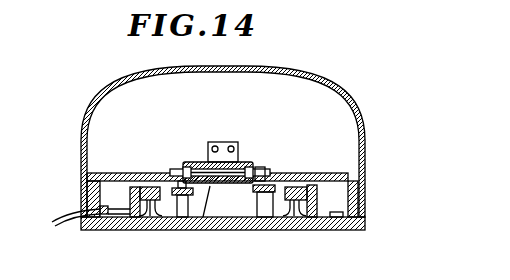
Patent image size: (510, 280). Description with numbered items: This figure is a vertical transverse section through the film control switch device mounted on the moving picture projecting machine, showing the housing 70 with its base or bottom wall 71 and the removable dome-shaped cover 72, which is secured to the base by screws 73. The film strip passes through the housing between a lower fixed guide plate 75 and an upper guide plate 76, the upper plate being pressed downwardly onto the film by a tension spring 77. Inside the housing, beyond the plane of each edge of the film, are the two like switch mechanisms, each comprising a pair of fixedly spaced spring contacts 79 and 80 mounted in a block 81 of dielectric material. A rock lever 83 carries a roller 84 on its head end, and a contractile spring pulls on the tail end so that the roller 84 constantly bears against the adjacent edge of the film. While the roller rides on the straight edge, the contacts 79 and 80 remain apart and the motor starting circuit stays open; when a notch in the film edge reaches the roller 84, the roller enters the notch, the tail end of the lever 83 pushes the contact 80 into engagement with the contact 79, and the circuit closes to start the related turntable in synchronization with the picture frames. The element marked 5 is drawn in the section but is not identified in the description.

The housing 70 is at (368, 205).
The dome-shaped cover 72 is at (273, 71).
The base or bottom wall 71 is at (263, 231).
The tension spring 77 is at (231, 138).
The upper guide plate 76 is at (239, 162).
The lower fixed guide plate 75 is at (206, 184).
The element 5 is at (207, 218).
The roller 84 is at (181, 186).
The rock lever 83 is at (182, 218).
The spring contact 80 is at (148, 186).
The spring contact 79 is at (135, 186).
The block 81 is at (134, 218).
The screws 73 is at (85, 218).